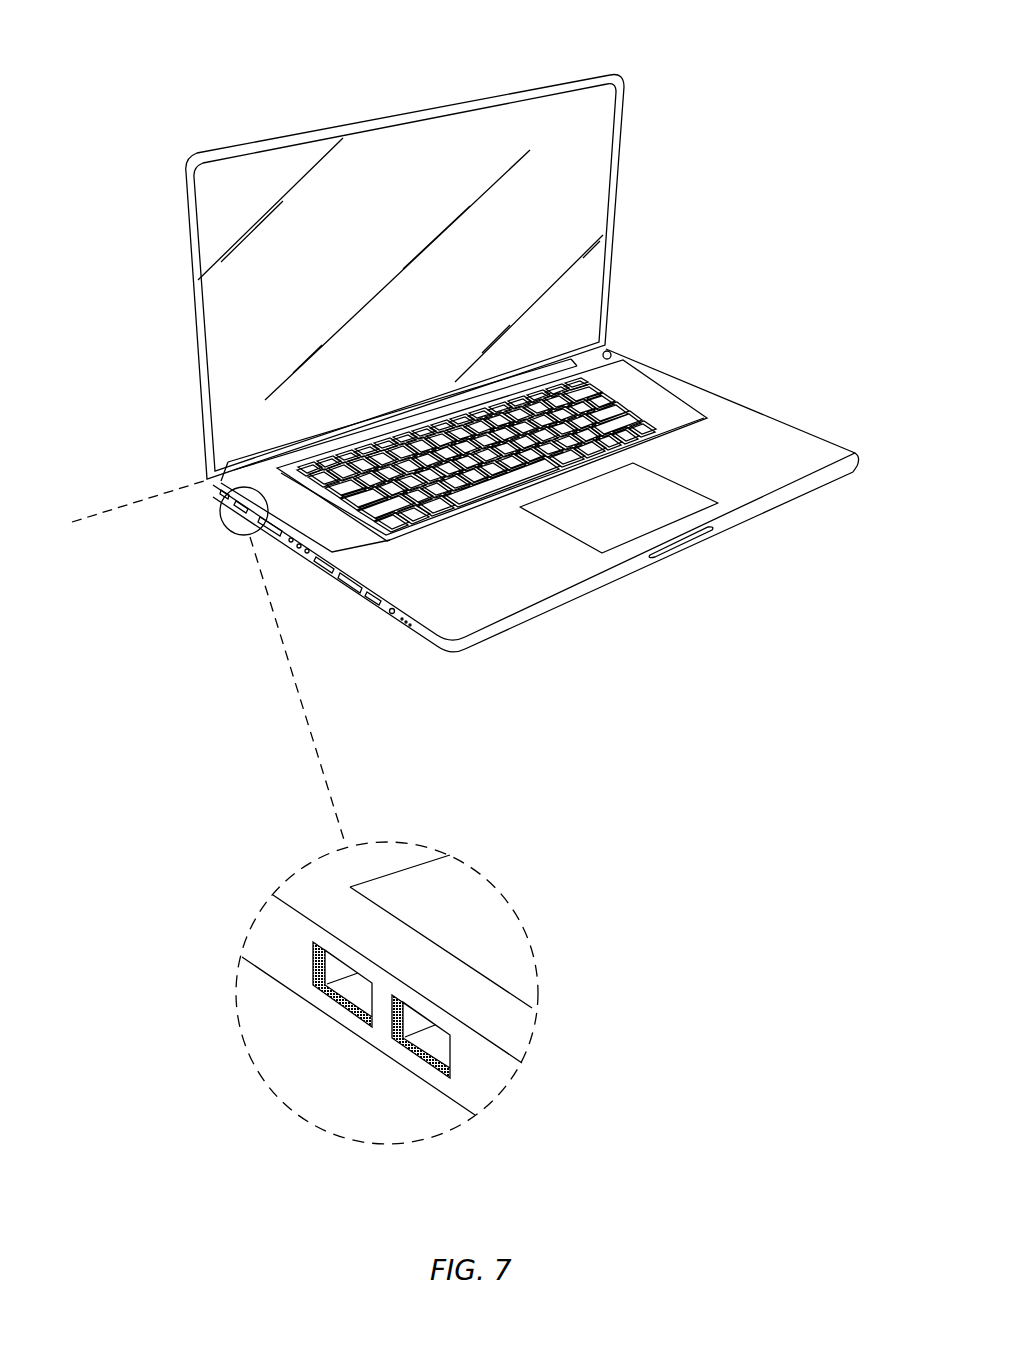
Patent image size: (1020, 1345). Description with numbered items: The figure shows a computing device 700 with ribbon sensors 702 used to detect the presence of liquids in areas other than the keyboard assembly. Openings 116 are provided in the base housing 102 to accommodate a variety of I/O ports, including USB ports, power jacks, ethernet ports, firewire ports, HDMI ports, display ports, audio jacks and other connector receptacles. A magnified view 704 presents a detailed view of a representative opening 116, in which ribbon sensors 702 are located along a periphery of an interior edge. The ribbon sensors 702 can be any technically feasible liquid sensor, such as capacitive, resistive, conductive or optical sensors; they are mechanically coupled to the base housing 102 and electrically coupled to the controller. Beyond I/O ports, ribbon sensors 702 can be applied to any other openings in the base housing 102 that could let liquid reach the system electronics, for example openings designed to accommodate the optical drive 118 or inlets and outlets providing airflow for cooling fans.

The computing device 700 is at (176, 94).
The base housing 102 is at (505, 602).
The optical drive 118 is at (753, 407).
The openings 116 is at (223, 510).
The ribbon sensors 702 is at (400, 1052).
The magnified view 704 is at (490, 880).